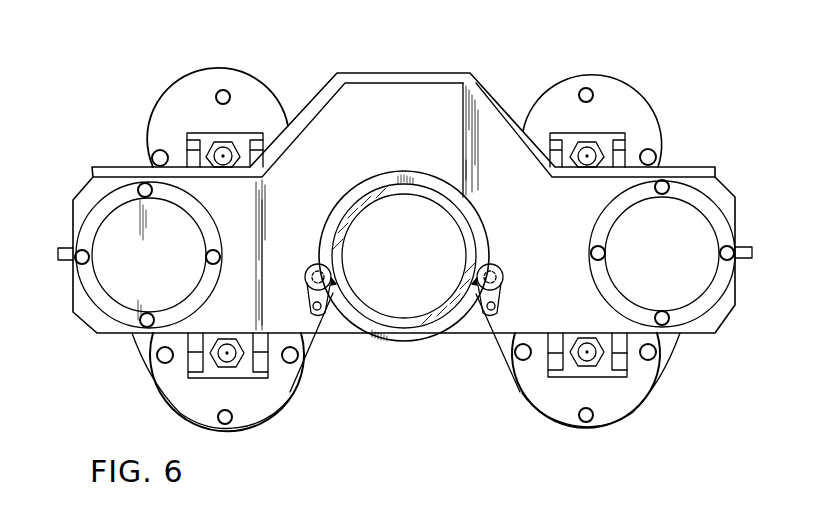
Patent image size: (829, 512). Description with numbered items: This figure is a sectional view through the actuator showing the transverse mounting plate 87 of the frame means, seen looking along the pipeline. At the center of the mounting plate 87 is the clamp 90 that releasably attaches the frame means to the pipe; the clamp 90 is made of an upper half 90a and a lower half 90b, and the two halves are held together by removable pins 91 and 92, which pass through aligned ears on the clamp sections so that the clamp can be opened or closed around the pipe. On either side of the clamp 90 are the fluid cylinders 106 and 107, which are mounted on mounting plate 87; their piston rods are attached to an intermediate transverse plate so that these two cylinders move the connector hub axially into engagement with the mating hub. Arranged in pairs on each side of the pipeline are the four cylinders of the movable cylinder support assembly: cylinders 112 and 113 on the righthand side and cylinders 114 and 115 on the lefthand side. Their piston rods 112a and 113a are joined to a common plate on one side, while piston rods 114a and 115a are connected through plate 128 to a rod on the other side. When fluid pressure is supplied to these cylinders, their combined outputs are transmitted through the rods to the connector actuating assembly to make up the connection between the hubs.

The mounting plate 87 is at (387, 118).
The clamp 90 is at (397, 261).
The upper half 90a is at (393, 173).
The lower half 90b is at (413, 342).
The removable pin 91 is at (327, 318).
The removable pin 92 is at (495, 273).
The fluid cylinder 106 is at (193, 269).
The fluid cylinder 107 is at (706, 262).
The cylinder 112 is at (607, 95).
The piston rod 112a is at (592, 147).
The cylinder 113 is at (637, 397).
The piston rod 113a is at (588, 360).
The cylinder 114 is at (178, 403).
The piston rod 114a is at (232, 361).
The cylinder 115 is at (250, 98).
The piston rod 115a is at (220, 150).
The plate 128 is at (203, 135).